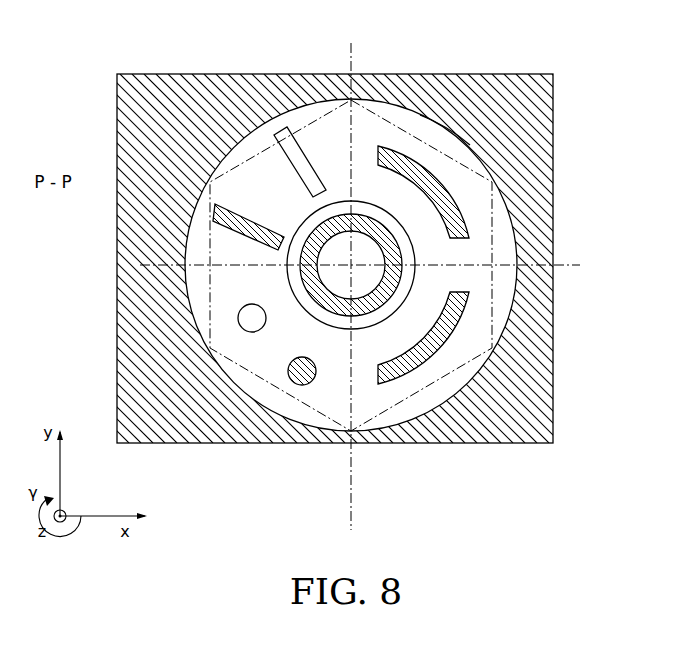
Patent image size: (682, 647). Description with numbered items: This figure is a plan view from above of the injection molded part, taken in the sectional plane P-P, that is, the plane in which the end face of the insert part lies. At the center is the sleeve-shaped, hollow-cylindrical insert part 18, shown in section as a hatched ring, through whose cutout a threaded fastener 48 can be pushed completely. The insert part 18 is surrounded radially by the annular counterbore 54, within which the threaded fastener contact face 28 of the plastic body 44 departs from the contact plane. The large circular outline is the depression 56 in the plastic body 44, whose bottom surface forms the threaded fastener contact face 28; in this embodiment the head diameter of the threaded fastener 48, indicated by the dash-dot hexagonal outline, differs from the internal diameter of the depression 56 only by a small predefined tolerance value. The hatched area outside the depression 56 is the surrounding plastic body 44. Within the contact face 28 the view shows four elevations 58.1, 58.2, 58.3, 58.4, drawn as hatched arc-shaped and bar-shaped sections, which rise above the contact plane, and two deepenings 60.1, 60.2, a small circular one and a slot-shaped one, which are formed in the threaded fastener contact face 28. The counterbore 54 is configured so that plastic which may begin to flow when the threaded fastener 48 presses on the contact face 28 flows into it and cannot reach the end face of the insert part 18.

The insert part 18 is at (385, 310).
The threaded fastener contact face 28 is at (506, 250).
The plastic body 44 is at (341, 258).
The threaded fastener 48 is at (495, 182).
The annular counterbore 54 is at (415, 276).
The depression 56 is at (447, 117).
The elevation 58.1 is at (473, 215).
The elevation 58.2 is at (455, 318).
The elevation 58.3 is at (302, 372).
The elevation 58.4 is at (222, 206).
The deepening 60.1 is at (252, 318).
The deepening 60.2 is at (263, 100).